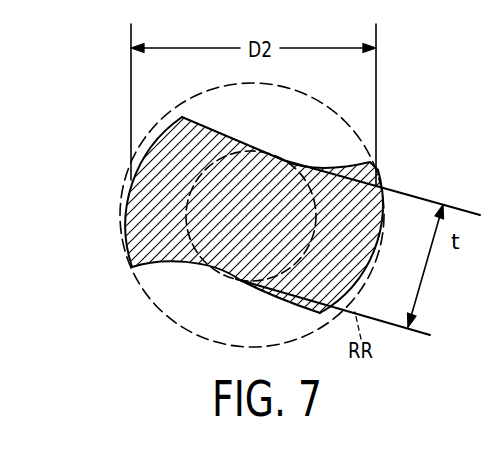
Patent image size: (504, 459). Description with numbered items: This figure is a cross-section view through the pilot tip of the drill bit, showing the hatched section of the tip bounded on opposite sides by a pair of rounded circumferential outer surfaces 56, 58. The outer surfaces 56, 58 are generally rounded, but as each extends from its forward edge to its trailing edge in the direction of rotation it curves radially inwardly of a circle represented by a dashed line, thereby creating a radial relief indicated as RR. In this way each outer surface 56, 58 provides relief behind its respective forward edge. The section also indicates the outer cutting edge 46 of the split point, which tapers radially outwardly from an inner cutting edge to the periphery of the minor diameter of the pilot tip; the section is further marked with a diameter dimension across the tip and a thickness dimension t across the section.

The outer cutting edge 46 is at (348, 164).
The rounded circumferential outer surface 56 is at (127, 198).
The rounded circumferential outer surface 58 is at (356, 279).